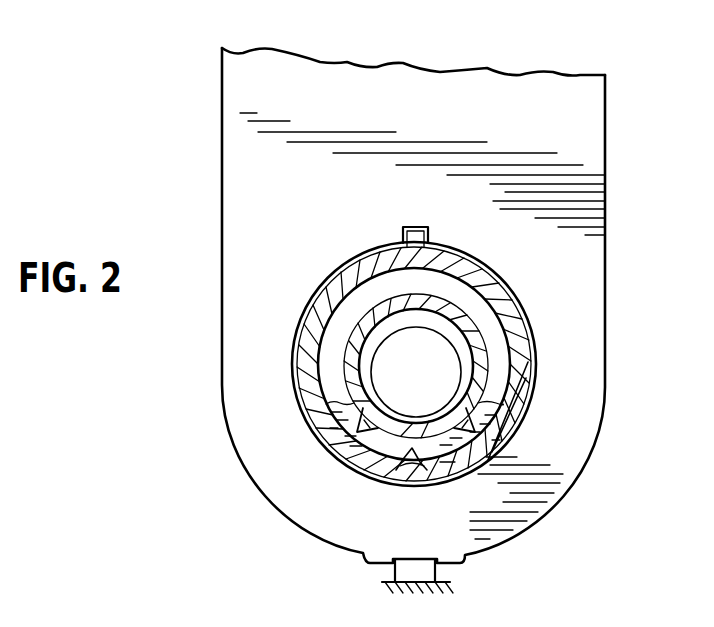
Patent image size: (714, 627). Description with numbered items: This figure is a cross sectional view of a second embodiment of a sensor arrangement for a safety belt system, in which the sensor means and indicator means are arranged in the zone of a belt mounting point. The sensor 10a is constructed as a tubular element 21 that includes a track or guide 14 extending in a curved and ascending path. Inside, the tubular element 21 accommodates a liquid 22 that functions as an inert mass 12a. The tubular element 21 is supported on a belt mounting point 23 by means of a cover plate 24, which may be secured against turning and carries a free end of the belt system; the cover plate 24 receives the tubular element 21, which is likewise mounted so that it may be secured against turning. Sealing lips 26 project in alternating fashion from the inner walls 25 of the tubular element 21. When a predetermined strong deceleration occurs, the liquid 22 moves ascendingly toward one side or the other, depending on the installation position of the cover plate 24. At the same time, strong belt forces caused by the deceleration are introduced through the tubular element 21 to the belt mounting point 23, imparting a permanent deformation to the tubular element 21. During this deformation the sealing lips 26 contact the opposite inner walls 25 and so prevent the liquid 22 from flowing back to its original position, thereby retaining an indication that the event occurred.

The cover plate 24 is at (582, 273).
The tubular element 21 is at (478, 275).
The sensor 10a is at (303, 323).
The inert mass 12a is at (327, 381).
The belt mounting point 23 is at (372, 342).
The inner walls 25 is at (447, 422).
The track or guide 14 is at (505, 381).
The sealing lips 26 is at (340, 435).
The liquid 22 is at (362, 466).